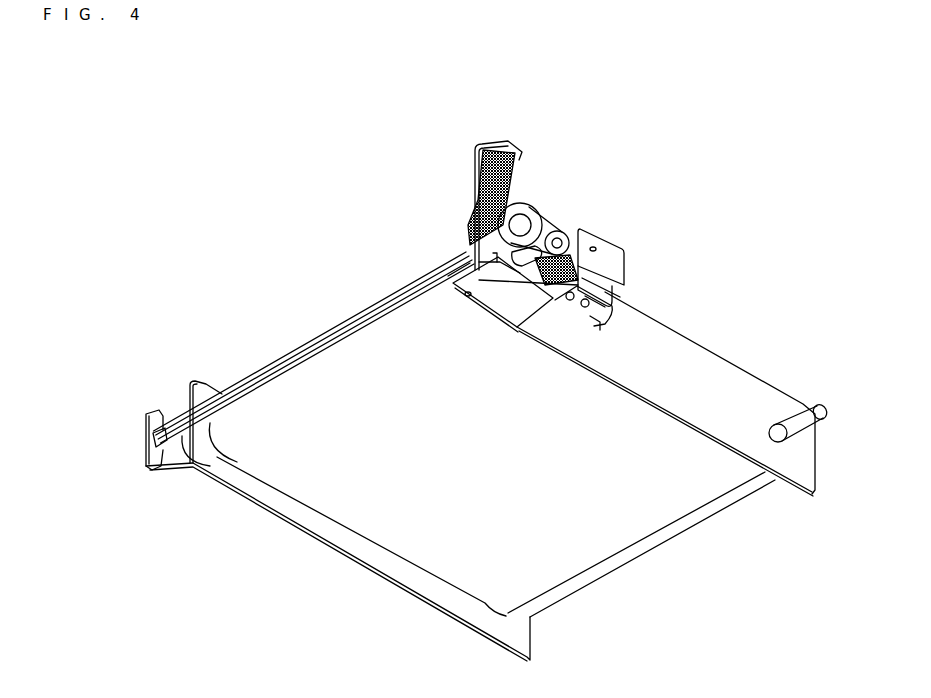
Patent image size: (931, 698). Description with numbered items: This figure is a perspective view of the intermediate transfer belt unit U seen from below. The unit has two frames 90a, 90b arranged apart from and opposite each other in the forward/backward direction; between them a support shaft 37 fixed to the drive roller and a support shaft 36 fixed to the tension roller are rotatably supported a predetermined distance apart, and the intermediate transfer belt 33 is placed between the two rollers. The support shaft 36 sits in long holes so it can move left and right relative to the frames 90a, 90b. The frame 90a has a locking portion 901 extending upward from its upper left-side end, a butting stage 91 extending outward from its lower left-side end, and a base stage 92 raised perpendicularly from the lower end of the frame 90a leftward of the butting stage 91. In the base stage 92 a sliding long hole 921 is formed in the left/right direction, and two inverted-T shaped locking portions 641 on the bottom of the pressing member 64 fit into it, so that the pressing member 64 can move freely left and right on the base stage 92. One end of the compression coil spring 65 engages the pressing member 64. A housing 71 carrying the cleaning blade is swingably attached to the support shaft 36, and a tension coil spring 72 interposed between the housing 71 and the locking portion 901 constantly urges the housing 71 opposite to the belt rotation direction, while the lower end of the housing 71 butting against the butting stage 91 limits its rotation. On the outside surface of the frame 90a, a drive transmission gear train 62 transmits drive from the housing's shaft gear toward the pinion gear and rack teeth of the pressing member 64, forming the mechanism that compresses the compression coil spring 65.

The intermediate transfer belt unit U is at (299, 238).
The intermediate transfer belt 33 is at (602, 517).
The support shaft 36 is at (518, 250).
The support shaft 37 is at (797, 403).
The drive transmission gear train 62 is at (544, 216).
The pressing member 64 is at (624, 262).
The compression coil spring 65 is at (560, 250).
The housing 71 is at (287, 337).
The tension coil spring 72 is at (474, 183).
The frame 90a is at (747, 392).
The frame 90b is at (320, 538).
The butting stage 91 is at (503, 300).
The base stage 92 is at (557, 312).
The locking portions 641 is at (585, 308).
The locking portion 901 is at (495, 138).
The sliding long hole 921 is at (598, 322).